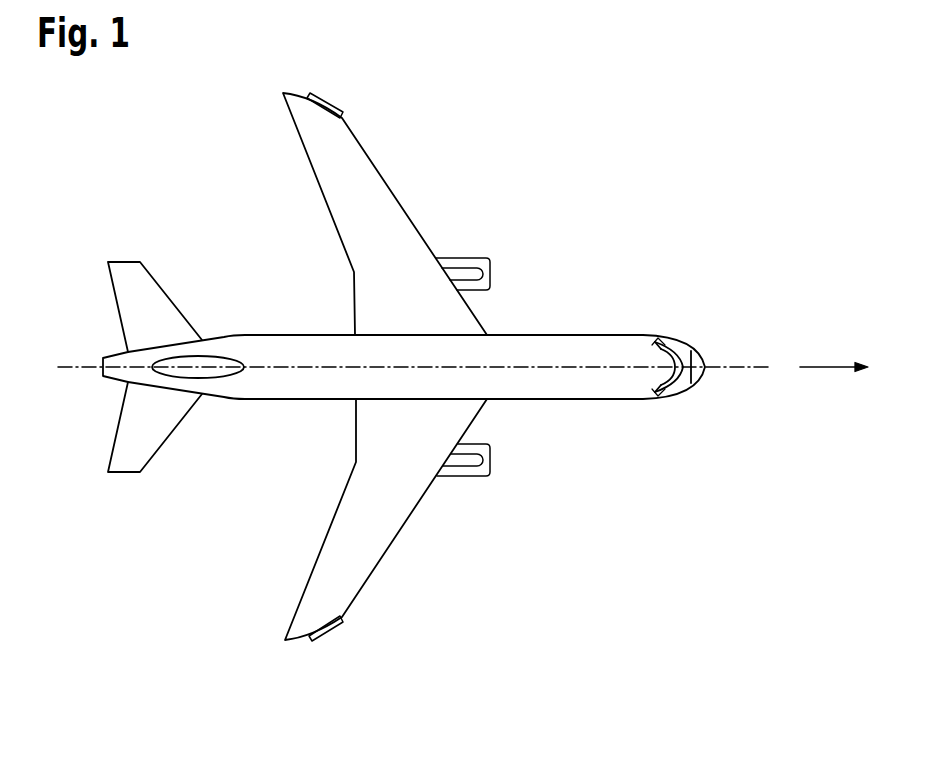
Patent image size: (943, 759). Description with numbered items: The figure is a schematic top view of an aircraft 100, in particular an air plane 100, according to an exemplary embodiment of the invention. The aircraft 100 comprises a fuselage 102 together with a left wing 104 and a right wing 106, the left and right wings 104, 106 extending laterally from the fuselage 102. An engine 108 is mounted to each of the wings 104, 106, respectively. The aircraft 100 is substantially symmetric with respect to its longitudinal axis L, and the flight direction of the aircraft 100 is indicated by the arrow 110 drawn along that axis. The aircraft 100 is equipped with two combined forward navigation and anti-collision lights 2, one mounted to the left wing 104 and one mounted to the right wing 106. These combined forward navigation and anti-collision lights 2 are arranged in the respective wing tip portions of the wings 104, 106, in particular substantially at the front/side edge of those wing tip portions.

The aircraft 100 is at (214, 540).
The fuselage 102 is at (250, 347).
The left wing 104 is at (388, 195).
The right wing 106 is at (392, 538).
The engine 108 is at (488, 273).
The combined forward navigation and anti-collision light 2 is at (328, 103).
The flight direction 110 is at (833, 368).
The longitudinal axis L is at (770, 368).